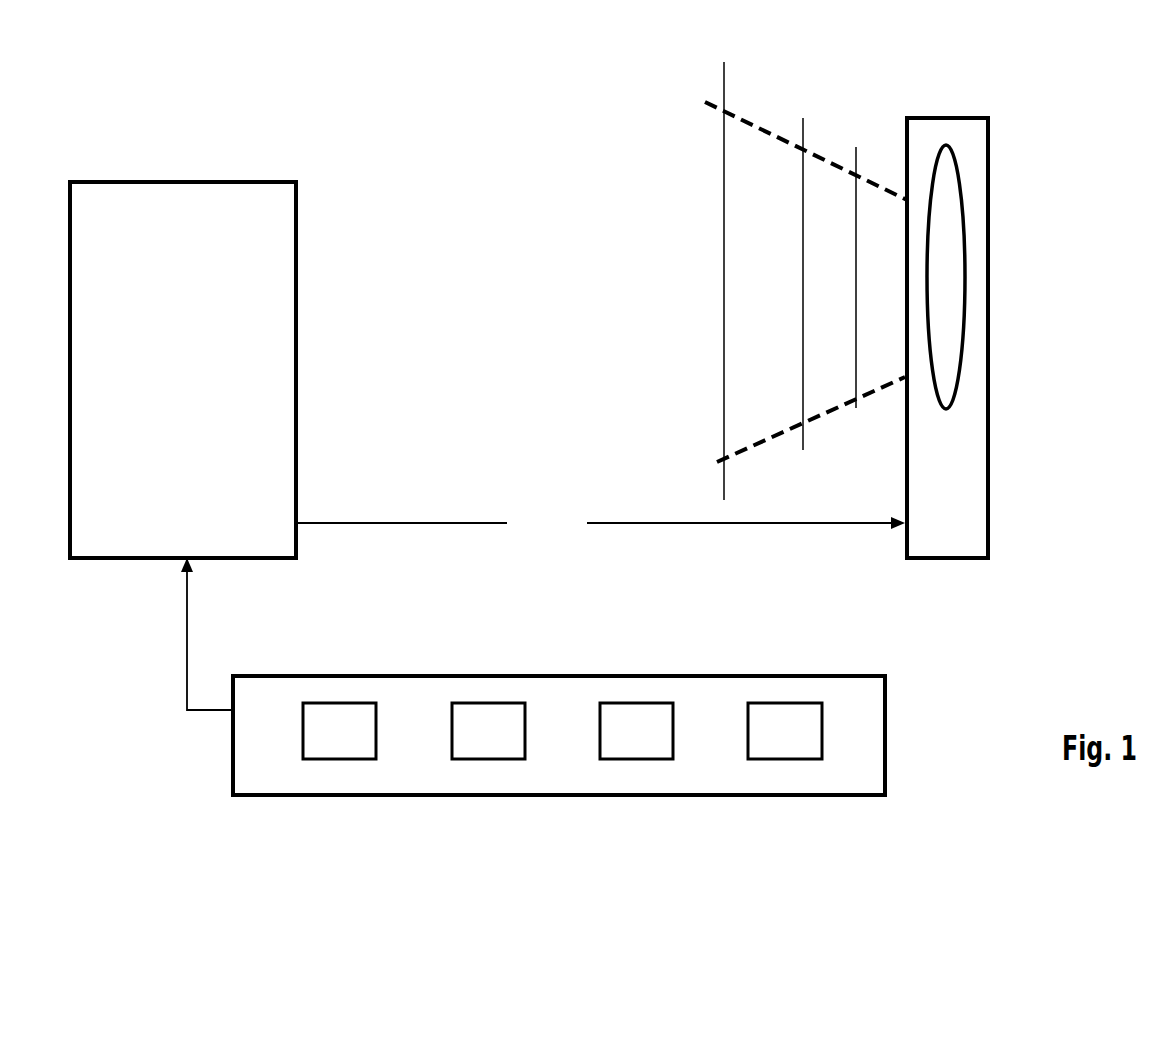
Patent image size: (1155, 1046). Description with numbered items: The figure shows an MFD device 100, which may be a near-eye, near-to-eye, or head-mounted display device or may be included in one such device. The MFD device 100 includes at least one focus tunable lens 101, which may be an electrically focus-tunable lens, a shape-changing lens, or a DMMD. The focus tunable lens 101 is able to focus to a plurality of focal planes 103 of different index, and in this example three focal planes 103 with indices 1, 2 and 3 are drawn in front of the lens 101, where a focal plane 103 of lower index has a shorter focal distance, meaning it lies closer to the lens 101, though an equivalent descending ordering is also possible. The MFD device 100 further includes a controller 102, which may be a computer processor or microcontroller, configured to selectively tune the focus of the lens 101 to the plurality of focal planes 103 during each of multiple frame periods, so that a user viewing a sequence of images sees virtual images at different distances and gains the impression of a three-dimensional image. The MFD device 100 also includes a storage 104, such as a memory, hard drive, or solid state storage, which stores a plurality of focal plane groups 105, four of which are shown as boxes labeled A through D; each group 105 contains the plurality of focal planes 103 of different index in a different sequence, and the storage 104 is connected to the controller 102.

The MFD device 100 is at (512, 57).
The focus tunable lens 101 is at (970, 191).
The controller 102 is at (167, 180).
The focal planes 103 is at (741, 256).
The storage 104 is at (888, 763).
The focal plane groups 105 is at (305, 820).
The focal plane index 1 is at (863, 254).
The focal plane index 2 is at (804, 259).
The focal plane index 3 is at (725, 256).